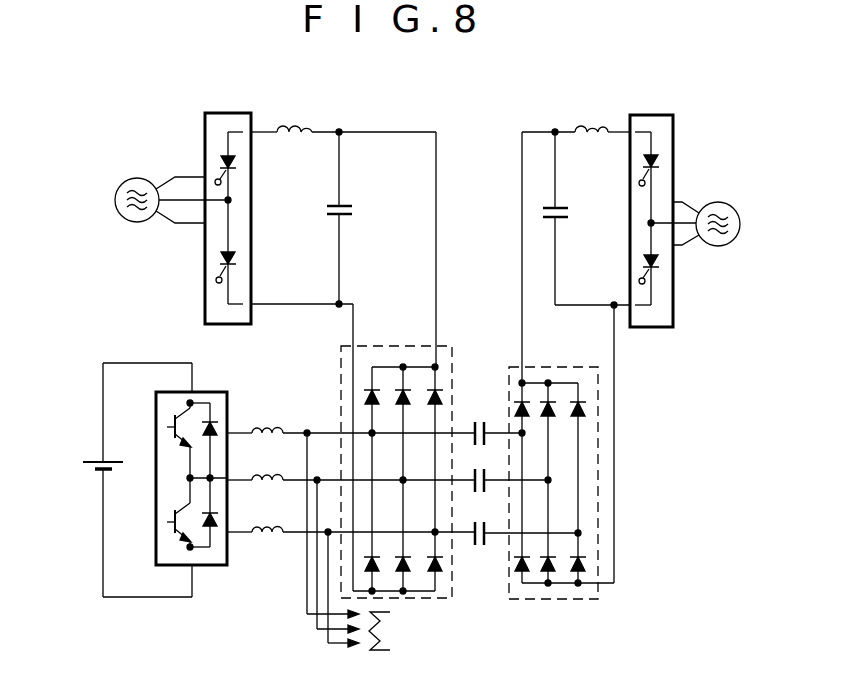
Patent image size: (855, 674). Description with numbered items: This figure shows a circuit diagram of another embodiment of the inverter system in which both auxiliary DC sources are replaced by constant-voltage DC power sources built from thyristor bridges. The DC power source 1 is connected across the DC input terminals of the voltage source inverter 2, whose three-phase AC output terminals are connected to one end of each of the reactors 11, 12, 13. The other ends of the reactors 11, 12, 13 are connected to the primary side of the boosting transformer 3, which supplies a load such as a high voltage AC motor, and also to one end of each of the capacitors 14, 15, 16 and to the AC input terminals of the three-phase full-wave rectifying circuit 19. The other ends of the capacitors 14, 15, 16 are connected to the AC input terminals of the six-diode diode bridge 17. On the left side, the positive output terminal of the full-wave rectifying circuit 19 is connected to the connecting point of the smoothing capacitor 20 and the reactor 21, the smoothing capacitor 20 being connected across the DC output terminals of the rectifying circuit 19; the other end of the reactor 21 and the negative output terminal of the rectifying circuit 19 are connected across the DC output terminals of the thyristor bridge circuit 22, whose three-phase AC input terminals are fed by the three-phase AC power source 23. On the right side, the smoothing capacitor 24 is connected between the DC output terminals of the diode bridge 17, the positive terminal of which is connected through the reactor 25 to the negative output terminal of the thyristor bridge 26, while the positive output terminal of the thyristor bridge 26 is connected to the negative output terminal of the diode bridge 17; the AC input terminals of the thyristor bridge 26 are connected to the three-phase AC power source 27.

The DC power source 1 is at (118, 461).
The voltage source inverter 2 is at (207, 392).
The boosting transformer 3 is at (391, 631).
The reactor 11 is at (267, 424).
The reactor 12 is at (270, 477).
The reactor 13 is at (270, 528).
The capacitor 14 is at (478, 421).
The capacitor 15 is at (481, 495).
The capacitor 16 is at (481, 548).
The diode bridge 17 is at (551, 367).
The three-phase full-wave rectifying circuit 19 is at (400, 346).
The smoothing capacitor 20 is at (354, 206).
The reactor 21 is at (290, 125).
The thyristor bridge circuit 22 is at (226, 113).
The three-phase AC power source 23 is at (134, 178).
The smoothing capacitor 24 is at (572, 210).
The reactor 25 is at (590, 125).
The thyristor bridge 26 is at (648, 114).
The three-phase AC power source 27 is at (716, 202).